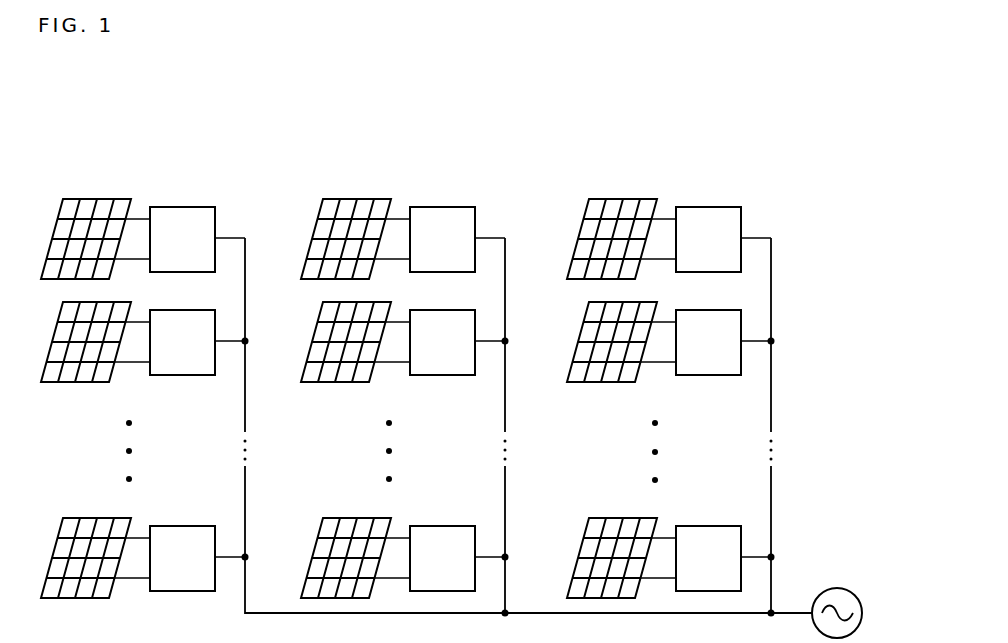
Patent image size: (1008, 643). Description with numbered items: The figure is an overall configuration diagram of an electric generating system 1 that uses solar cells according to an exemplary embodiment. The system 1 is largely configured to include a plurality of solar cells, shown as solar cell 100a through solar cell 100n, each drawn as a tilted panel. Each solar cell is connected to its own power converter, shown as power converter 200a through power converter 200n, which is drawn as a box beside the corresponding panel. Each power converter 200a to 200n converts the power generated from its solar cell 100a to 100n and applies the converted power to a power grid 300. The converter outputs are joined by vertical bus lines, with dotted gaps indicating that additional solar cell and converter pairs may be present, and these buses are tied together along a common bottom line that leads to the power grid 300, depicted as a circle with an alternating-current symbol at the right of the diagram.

The electric generating system 1 is at (37, 88).
The solar cell 100a is at (100, 197).
The power converter 200a is at (185, 206).
The solar cell 100n is at (612, 518).
The power converter 200n is at (708, 526).
The power grid 300 is at (837, 588).